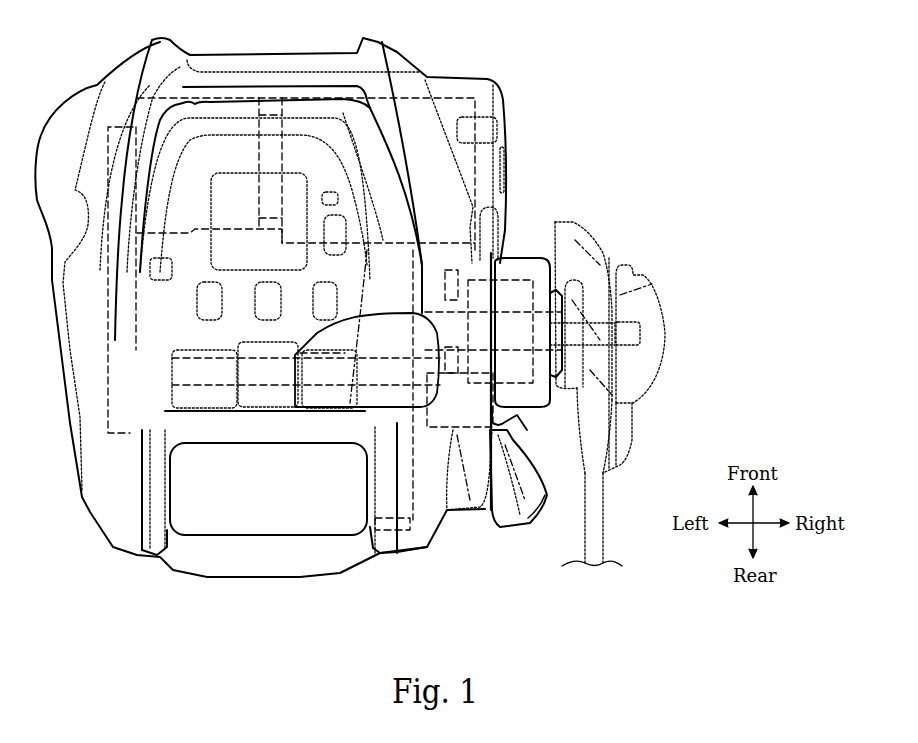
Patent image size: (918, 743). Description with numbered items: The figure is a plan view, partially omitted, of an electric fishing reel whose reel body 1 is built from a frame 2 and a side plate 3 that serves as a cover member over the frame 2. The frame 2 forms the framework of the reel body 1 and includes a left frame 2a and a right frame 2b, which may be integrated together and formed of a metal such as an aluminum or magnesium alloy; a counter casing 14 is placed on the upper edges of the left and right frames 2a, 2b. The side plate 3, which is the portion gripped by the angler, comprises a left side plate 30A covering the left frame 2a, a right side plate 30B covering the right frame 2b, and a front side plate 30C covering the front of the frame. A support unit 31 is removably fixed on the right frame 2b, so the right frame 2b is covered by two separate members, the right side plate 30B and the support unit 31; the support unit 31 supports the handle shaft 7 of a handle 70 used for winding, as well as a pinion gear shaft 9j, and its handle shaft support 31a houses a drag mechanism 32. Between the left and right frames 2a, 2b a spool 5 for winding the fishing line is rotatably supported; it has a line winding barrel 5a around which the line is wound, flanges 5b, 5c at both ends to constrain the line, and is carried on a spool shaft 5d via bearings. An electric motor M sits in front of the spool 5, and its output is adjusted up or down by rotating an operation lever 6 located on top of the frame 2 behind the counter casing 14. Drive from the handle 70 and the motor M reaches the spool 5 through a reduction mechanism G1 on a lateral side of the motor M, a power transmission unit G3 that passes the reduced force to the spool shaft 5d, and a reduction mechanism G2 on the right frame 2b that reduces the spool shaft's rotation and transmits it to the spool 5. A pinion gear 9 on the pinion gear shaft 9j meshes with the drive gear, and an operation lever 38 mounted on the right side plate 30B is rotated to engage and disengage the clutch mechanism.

The reel body 1 is at (673, 113).
The frame 2 is at (284, 561).
The left frame 2a is at (157, 547).
The right frame 2b is at (392, 547).
The side plate 3 is at (274, 222).
The left side plate 30A is at (92, 512).
The right side plate 30B is at (460, 513).
The front side plate 30C is at (201, 49).
The spool 5 is at (310, 430).
The line winding barrel 5a is at (250, 420).
The flange 5b is at (170, 483).
The flange 5c is at (367, 488).
The spool shaft 5d is at (253, 413).
The operation lever 6 is at (355, 312).
The handle shaft 7 is at (650, 283).
The pinion gear 9 is at (467, 513).
The pinion gear shaft 9j is at (543, 507).
The counter casing 14 is at (305, 153).
The support unit 31 is at (510, 256).
The handle shaft support 31a is at (517, 407).
The drag mechanism 32 is at (525, 262).
The operation lever 38 is at (512, 508).
The handle 70 is at (615, 478).
The reduction mechanism G1 is at (170, 103).
The reduction mechanism G2 is at (407, 520).
The power transmission unit G3 is at (107, 153).
The electric motor M is at (457, 93).